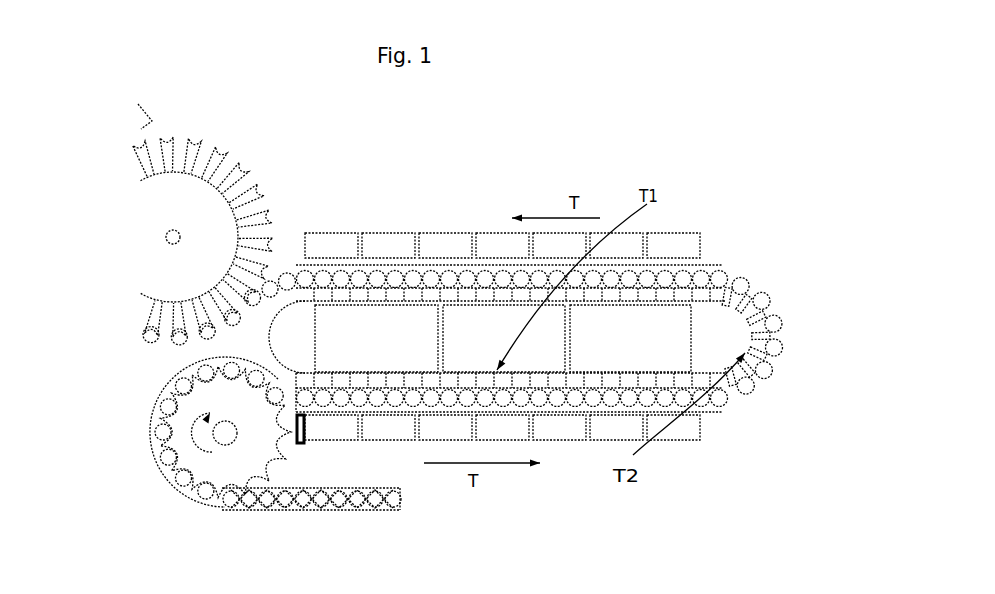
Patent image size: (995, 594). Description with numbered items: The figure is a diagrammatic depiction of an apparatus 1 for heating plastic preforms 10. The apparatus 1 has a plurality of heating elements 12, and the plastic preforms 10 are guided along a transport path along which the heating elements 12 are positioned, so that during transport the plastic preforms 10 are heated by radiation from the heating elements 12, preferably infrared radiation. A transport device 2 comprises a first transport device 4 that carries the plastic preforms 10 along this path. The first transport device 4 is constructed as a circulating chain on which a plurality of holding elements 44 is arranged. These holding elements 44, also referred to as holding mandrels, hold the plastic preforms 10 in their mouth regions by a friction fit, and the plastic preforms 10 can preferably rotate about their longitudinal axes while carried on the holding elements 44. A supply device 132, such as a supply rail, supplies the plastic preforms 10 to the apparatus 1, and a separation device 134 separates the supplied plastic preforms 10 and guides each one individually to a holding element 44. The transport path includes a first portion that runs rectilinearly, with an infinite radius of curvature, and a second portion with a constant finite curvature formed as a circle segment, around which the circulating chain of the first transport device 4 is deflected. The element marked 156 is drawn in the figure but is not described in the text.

The apparatus 1 is at (510, 200).
The transport device 2 is at (665, 222).
The first transport device 4 is at (733, 263).
The plastic preforms 10 is at (162, 460).
The heating elements 12 is at (498, 338).
The holding elements 44 is at (778, 348).
The supply device 132 is at (283, 513).
The separation device 134 is at (188, 422).
The transfer star wheel 156 is at (248, 137).